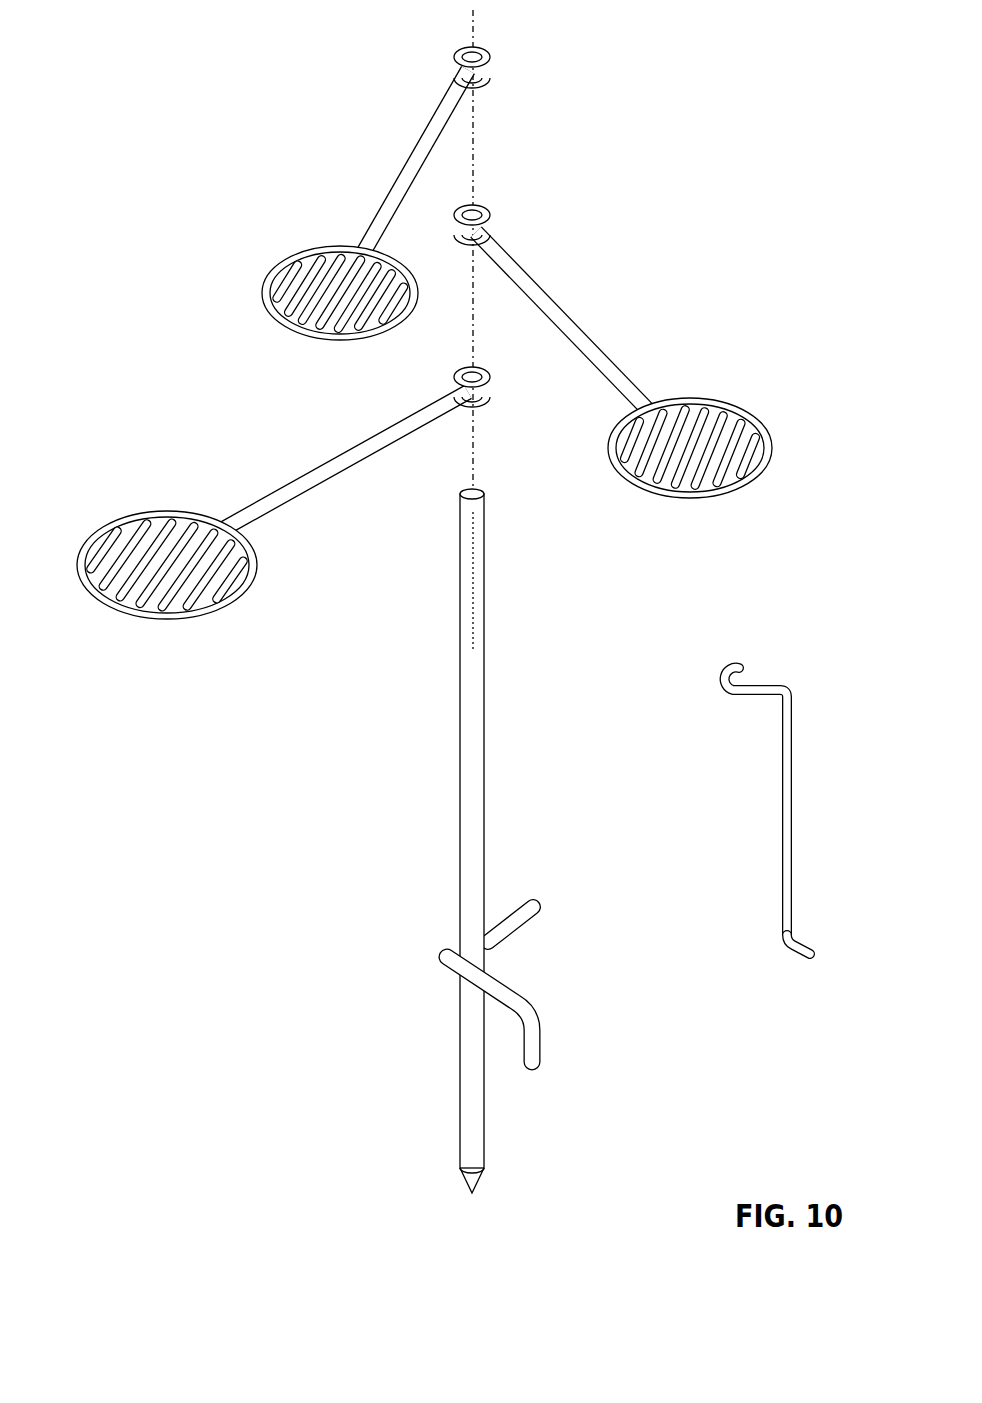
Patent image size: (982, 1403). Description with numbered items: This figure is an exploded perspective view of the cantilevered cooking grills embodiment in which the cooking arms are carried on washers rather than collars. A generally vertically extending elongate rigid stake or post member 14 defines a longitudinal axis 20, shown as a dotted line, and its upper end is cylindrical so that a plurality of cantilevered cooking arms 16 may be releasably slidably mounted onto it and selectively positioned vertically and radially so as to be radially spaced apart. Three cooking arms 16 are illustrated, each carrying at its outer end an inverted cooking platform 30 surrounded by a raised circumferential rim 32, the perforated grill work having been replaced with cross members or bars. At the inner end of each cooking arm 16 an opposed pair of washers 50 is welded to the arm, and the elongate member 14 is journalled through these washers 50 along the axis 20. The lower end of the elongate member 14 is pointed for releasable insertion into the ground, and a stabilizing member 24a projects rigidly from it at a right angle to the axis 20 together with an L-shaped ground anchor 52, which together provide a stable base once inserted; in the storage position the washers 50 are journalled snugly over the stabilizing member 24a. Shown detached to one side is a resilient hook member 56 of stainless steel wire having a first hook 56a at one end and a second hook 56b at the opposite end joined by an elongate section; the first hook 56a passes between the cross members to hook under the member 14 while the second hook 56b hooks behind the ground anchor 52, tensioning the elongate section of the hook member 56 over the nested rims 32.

The elongate member 14 is at (460, 825).
The cantilevered cooking arm 16 is at (430, 145).
The longitudinal axis 20 is at (476, 150).
The stabilizing member 24a is at (545, 905).
The cooking platform 30 is at (419, 434).
The raised circumferential rim 32 is at (305, 335).
The washer 50 is at (486, 52).
The L-shaped ground anchor 52 is at (548, 1015).
The resilient hook member 56 is at (769, 798).
The first hook 56a is at (736, 665).
The second hook 56b is at (808, 940).